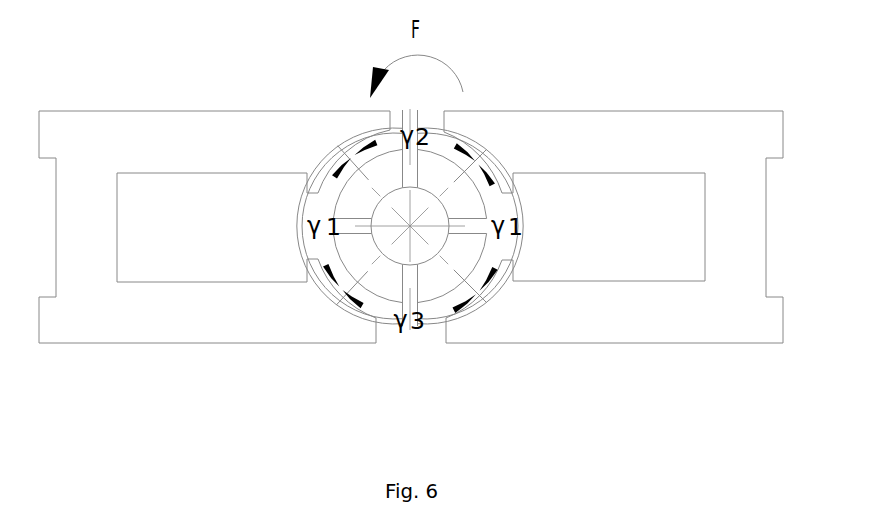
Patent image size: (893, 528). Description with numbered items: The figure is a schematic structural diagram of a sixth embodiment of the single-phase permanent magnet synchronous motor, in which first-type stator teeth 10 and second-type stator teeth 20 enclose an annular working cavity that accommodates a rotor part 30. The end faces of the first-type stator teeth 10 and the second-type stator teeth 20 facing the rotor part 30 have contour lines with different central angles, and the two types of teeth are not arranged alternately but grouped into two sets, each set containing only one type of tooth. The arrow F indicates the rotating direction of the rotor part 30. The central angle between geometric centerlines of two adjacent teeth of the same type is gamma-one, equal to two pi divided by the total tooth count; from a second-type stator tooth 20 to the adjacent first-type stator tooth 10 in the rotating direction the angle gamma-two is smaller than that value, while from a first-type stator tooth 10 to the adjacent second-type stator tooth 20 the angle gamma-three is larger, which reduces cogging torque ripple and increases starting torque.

The first-type stator teeth 10 is at (323, 133).
The second-type stator teeth 20 is at (483, 136).
The rotor part 30 is at (465, 247).